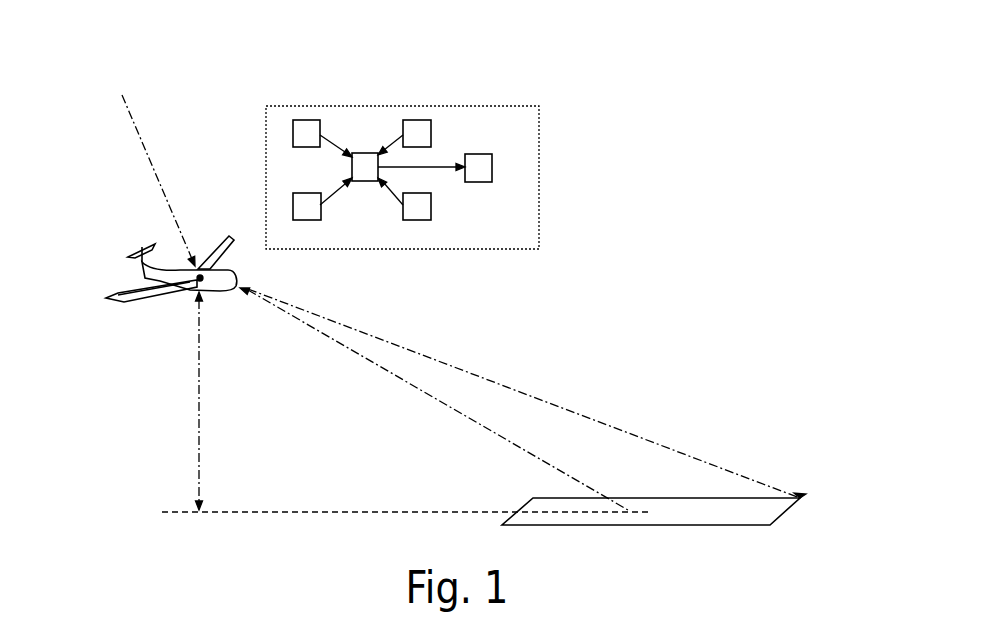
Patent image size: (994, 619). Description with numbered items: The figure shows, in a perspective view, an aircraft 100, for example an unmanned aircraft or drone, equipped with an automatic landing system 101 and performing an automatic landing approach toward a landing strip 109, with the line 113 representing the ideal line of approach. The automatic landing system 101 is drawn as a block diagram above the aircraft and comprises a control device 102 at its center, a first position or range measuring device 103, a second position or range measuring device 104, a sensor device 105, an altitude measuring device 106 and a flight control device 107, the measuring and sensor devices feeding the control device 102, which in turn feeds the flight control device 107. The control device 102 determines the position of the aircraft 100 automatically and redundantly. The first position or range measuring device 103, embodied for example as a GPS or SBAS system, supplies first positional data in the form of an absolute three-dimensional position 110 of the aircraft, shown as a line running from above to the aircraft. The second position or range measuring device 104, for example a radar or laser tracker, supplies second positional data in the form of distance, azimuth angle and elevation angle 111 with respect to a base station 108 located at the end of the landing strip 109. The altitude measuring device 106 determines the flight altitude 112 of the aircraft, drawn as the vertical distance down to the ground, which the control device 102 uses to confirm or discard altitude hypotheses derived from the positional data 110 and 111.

The aircraft 100 is at (148, 268).
The automatic landing system 101 is at (542, 175).
The control device 102 is at (365, 168).
The first position or range measuring device 103 is at (305, 135).
The second position or range measuring device 104 is at (307, 207).
The sensor device 105 is at (418, 135).
The altitude measuring device 106 is at (415, 207).
The flight control device 107 is at (480, 170).
The base station 108 is at (803, 498).
The landing strip 109 is at (743, 513).
The absolute three-dimensional position 110 is at (150, 158).
The distance, azimuth angle and elevation angle 111 is at (532, 398).
The flight altitude 112 is at (198, 433).
The ideal line of approach 113 is at (373, 358).